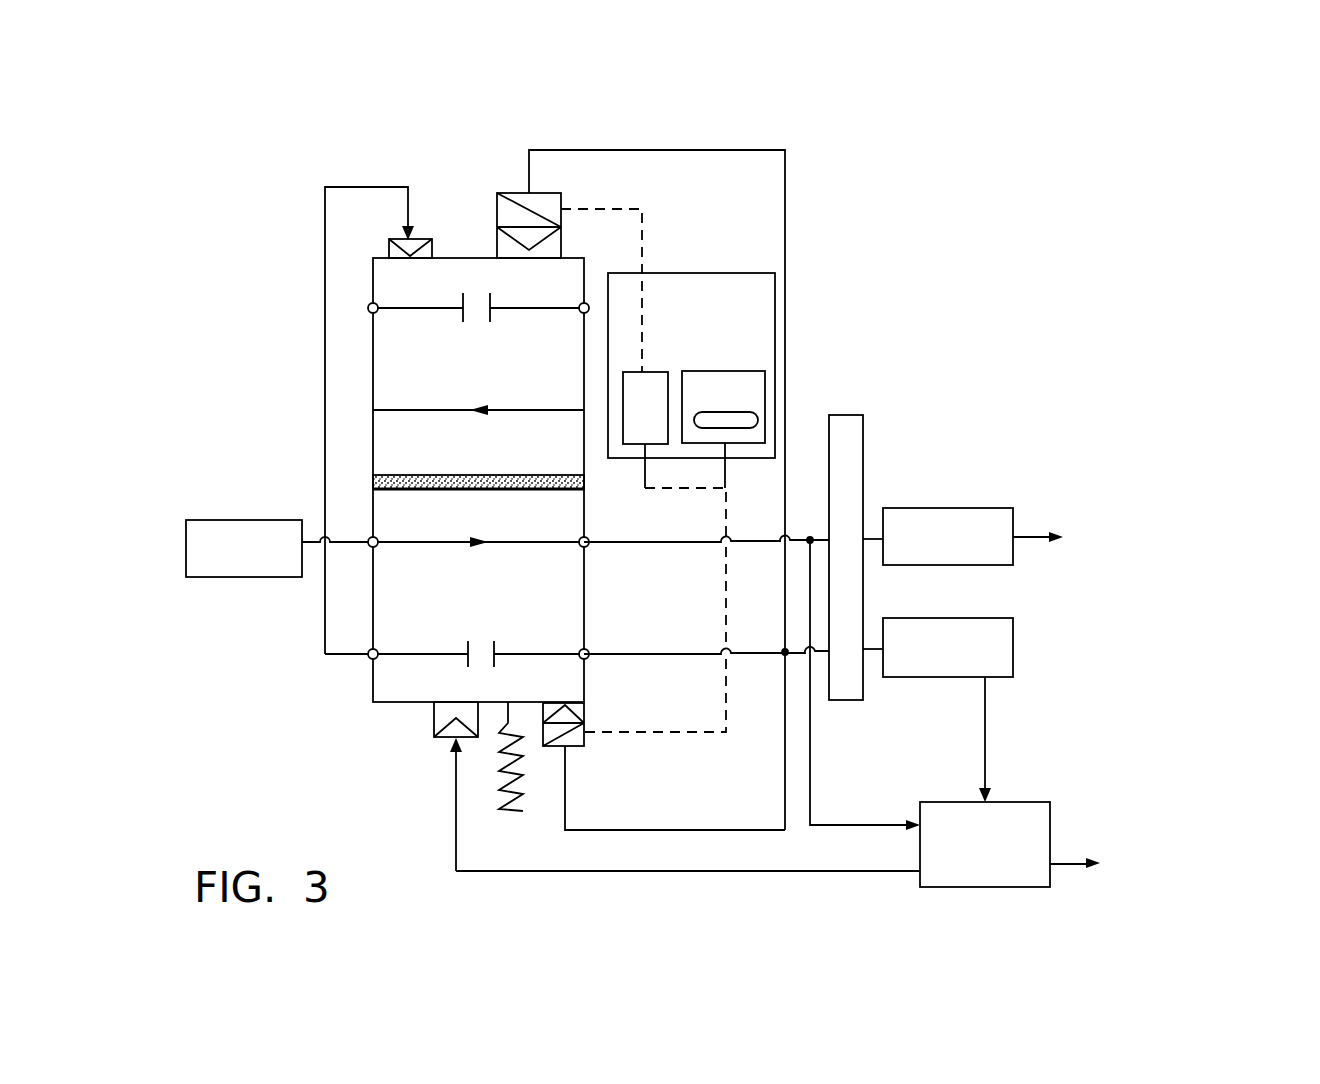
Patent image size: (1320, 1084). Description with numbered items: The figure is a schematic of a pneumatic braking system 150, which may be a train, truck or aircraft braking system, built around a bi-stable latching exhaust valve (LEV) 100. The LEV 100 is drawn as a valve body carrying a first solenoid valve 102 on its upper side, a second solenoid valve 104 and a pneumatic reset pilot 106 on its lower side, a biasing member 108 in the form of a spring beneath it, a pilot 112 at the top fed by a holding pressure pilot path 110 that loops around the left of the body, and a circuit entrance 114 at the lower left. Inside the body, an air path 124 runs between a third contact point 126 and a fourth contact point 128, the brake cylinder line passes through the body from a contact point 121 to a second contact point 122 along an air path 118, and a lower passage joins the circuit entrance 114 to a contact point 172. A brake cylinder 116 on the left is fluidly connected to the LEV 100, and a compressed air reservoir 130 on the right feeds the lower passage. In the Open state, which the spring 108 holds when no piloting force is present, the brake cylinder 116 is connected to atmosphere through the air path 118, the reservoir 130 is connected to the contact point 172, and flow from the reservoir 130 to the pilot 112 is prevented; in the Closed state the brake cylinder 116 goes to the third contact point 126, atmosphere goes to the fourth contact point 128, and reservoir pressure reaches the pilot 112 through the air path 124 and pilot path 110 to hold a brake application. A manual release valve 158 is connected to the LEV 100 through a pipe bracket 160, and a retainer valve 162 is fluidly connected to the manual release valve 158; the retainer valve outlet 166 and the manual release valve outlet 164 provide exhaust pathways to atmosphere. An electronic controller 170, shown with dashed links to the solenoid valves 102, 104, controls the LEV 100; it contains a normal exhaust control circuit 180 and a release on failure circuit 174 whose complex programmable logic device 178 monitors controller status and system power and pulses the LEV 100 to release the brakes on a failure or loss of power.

The latching exhaust valve 100 is at (446, 180).
The first solenoid valve 102 is at (545, 192).
The second solenoid valve 104 is at (585, 748).
The pneumatic reset pilot 106 is at (434, 718).
The biasing member 108 is at (526, 826).
The holding pressure pilot path 110 is at (324, 355).
The pilot 112 is at (403, 238).
The circuit entrance 114 is at (372, 660).
The brake cylinder 116 is at (266, 519).
The air path 118 is at (530, 546).
The first port 121 is at (376, 537).
The second contact point 122 is at (582, 537).
The air path 124 is at (537, 312).
The third contact point 126 is at (375, 303).
The fourth contact point 128 is at (582, 303).
The compressed air reservoir 130 is at (970, 617).
The pneumatic braking system 150 is at (990, 168).
The manual release valve 158 is at (945, 801).
The pipe bracket 160 is at (864, 442).
The retainer valve 162 is at (970, 507).
The outlet 164 is at (1065, 860).
The outlet 166 is at (1030, 536).
The electronic controller 170 is at (744, 272).
The contact point 172 is at (583, 649).
The release on failure circuit 174 is at (757, 370).
The complex programmable logic device 178 is at (752, 411).
The normal exhaust control circuit 180 is at (655, 371).